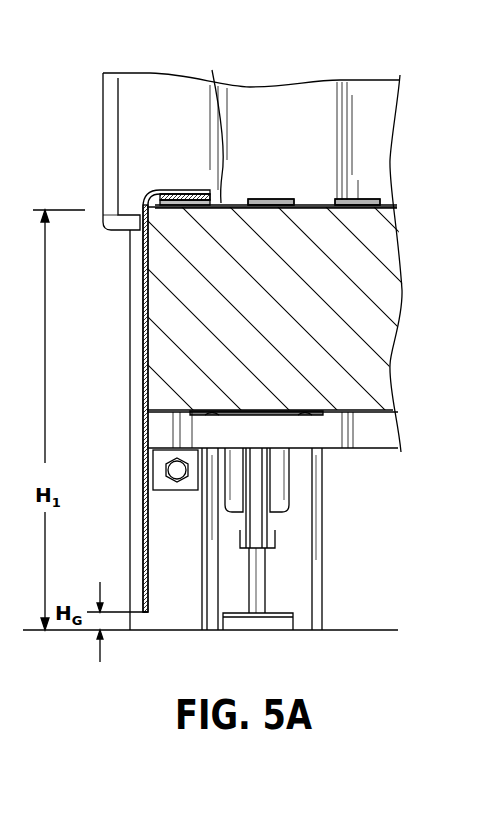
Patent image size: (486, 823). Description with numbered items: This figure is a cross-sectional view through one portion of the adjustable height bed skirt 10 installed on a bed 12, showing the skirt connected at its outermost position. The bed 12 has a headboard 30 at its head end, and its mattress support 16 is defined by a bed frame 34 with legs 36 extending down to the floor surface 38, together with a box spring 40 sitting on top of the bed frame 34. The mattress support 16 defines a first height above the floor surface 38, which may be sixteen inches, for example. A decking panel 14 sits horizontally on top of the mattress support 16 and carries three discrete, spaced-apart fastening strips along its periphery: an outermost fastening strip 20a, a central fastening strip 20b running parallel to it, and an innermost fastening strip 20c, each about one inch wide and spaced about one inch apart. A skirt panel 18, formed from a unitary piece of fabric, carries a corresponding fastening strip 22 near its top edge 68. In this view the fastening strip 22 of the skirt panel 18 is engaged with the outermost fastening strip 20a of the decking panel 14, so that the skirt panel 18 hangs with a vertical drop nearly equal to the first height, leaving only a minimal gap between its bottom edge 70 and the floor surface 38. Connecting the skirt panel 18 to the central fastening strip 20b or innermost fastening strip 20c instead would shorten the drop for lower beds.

The adjustable height bed skirt 10 is at (146, 197).
The bed 12 is at (372, 80).
The decking panel 14 is at (308, 205).
The mattress support 16 is at (378, 450).
The skirt panel 18 is at (143, 431).
The outermost fastening strip 20a is at (186, 208).
The central fastening strip 20b is at (271, 198).
The innermost fastening strip 20c is at (375, 198).
The fastening strip 22 is at (175, 192).
The headboard 30 is at (267, 100).
The bed frame 34 is at (317, 420).
The legs 36 is at (260, 570).
The floor surface 38 is at (365, 630).
The box spring 40 is at (385, 340).
The top edge 68 is at (210, 125).
The bottom edge 70 is at (145, 614).